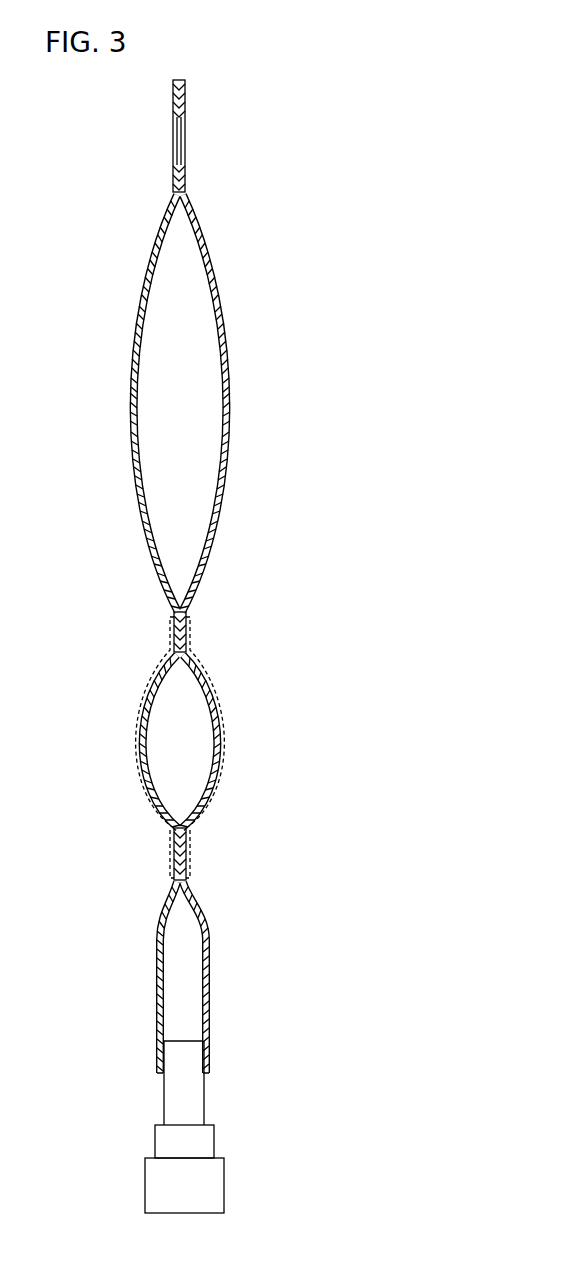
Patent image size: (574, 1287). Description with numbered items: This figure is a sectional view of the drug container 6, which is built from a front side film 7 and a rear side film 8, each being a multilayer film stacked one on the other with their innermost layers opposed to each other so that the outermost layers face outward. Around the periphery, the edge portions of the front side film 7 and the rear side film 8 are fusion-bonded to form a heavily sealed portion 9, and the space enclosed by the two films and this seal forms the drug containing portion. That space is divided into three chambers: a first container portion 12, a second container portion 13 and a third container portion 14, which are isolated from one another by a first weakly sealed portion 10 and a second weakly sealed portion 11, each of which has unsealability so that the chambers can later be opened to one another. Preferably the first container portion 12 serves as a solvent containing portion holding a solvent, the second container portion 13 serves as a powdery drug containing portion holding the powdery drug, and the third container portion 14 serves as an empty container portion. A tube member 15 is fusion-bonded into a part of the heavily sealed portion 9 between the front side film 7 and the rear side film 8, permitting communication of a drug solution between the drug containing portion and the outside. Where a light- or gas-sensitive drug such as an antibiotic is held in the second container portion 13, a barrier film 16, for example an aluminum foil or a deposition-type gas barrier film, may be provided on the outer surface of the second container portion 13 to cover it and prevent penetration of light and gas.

The drug container 6 is at (330, 125).
The front side film 7 is at (210, 527).
The rear side film 8 is at (147, 512).
The heavily sealed portion 9 is at (187, 83).
The first weakly sealed portion 10 is at (183, 628).
The second weakly sealed portion 11 is at (183, 853).
The first container portion 12 is at (200, 441).
The second container portion 13 is at (194, 741).
The third container portion 14 is at (187, 995).
The tube member 15 is at (224, 1183).
The barrier film 16 is at (143, 786).